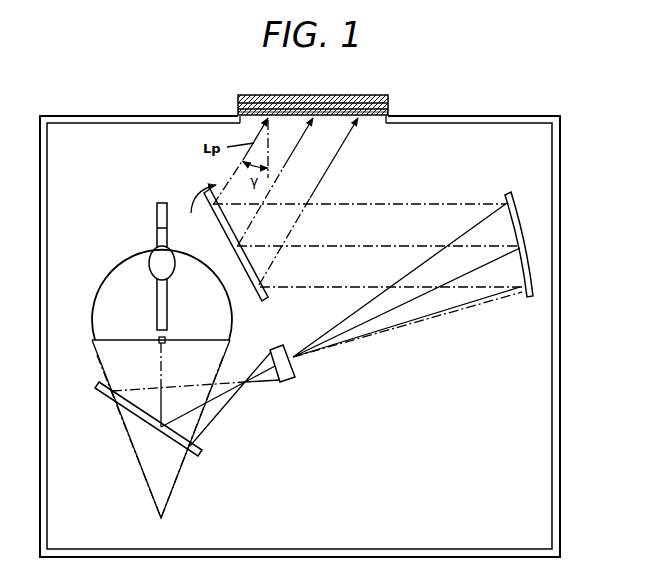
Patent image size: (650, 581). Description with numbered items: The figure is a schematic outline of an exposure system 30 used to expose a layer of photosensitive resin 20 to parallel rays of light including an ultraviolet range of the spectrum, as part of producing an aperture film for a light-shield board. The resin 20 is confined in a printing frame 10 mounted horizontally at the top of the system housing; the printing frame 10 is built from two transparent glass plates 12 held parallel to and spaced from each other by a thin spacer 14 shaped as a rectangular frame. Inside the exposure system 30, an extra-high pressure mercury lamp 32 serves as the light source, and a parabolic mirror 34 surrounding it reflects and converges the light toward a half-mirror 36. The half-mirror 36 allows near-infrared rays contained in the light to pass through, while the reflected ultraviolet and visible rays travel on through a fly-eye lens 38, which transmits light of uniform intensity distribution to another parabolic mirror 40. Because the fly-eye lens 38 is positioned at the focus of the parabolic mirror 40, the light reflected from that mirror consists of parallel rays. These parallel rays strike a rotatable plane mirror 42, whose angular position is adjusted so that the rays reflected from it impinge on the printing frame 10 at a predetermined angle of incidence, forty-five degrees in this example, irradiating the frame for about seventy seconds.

The printing frame 10 is at (383, 95).
The transparent glass plates 12 is at (372, 116).
The spacer 14 is at (390, 101).
The photosensitive resin 20 is at (328, 116).
The exposure system 30 is at (137, 111).
The extra-high pressure mercury lamp 32 is at (162, 268).
The parabolic mirror 34 is at (105, 284).
The half-mirror 36 is at (153, 427).
The fly-eye lens 38 is at (288, 378).
The parabolic mirror 40 is at (511, 201).
The plane mirror 42 is at (227, 235).